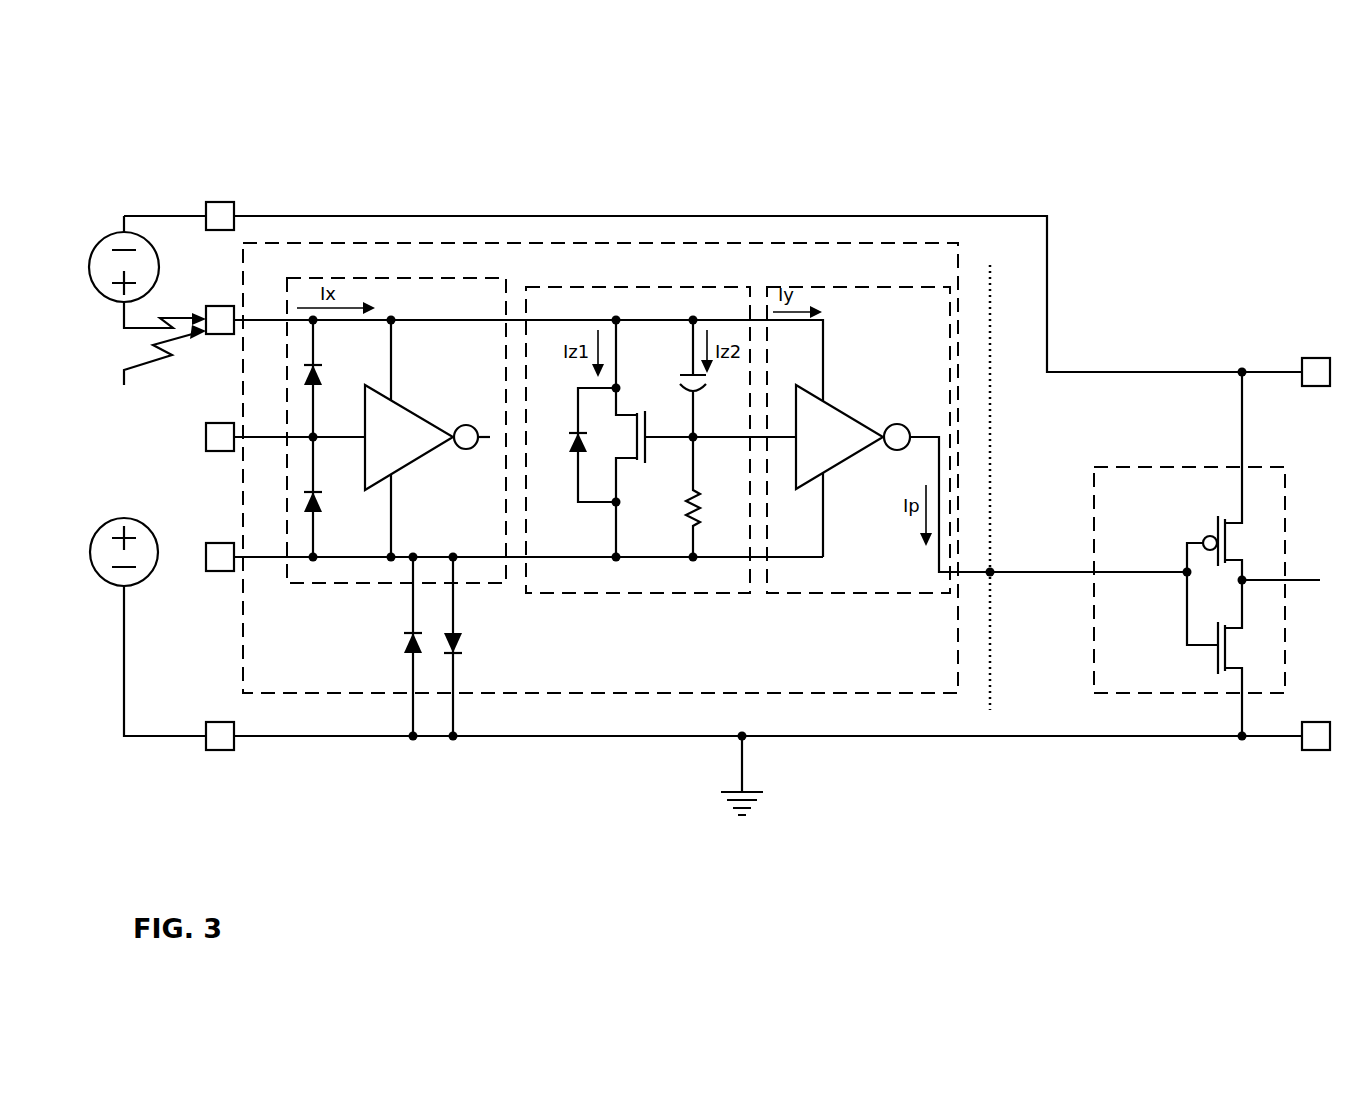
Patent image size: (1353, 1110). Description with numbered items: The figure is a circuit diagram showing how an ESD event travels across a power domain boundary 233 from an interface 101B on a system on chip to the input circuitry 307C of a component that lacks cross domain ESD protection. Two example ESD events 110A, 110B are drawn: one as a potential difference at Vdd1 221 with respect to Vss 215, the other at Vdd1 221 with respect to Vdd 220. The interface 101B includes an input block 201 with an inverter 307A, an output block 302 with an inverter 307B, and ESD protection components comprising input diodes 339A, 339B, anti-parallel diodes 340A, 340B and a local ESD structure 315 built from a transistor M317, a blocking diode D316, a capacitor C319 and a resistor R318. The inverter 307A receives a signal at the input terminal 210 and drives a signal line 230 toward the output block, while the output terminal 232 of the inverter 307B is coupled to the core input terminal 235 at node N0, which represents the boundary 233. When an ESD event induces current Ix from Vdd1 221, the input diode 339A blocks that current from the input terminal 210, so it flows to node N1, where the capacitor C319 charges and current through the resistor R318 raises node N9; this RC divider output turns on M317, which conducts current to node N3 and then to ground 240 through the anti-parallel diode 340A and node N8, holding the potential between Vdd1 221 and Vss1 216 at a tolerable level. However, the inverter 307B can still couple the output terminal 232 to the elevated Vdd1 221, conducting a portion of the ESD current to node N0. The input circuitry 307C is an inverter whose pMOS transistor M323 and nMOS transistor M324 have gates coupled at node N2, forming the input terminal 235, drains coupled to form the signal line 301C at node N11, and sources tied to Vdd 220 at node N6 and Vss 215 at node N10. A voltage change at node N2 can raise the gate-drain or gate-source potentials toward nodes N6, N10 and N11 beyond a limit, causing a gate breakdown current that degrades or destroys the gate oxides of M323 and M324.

The ESD event 110A is at (135, 592).
The ESD event 110B is at (119, 228).
The Vdd 220 is at (223, 201).
The Vdd1 221 is at (222, 333).
The input terminal 210 is at (222, 450).
The Vss1 216 is at (216, 572).
The Vss 215 is at (214, 751).
The interface 101B is at (480, 243).
The input block 201 is at (335, 278).
The local ESD structure 315 is at (697, 287).
The output block 302 is at (815, 287).
The inverter 307A is at (427, 438).
The inverter 307B is at (853, 437).
The input circuitry 307C is at (1117, 467).
The input diode 339A is at (323, 376).
The input diode 339B is at (323, 503).
The anti-parallel diode 340A is at (462, 643).
The anti-parallel diode 340B is at (407, 643).
The signal line 230 is at (487, 443).
The output terminal 232 is at (906, 432).
The power domain boundary 233 is at (988, 258).
The input terminal 235 is at (1076, 574).
The ground 240 is at (765, 774).
The transistor M317 is at (641, 438).
The blocking diode D316 is at (575, 442).
The capacitor C319 is at (706, 379).
The resistor R318 is at (700, 512).
The transistor M323 is at (1233, 508).
The transistor M324 is at (1249, 658).
The signal line 301C is at (1309, 582).
The node N0 is at (988, 576).
The node N1 is at (616, 318).
The node N2 is at (1187, 575).
The node N3 is at (453, 555).
The node N6 is at (1242, 374).
The node N8 is at (455, 738).
The node N9 is at (698, 439).
The node N10 is at (1242, 739).
The node N11 is at (1244, 579).